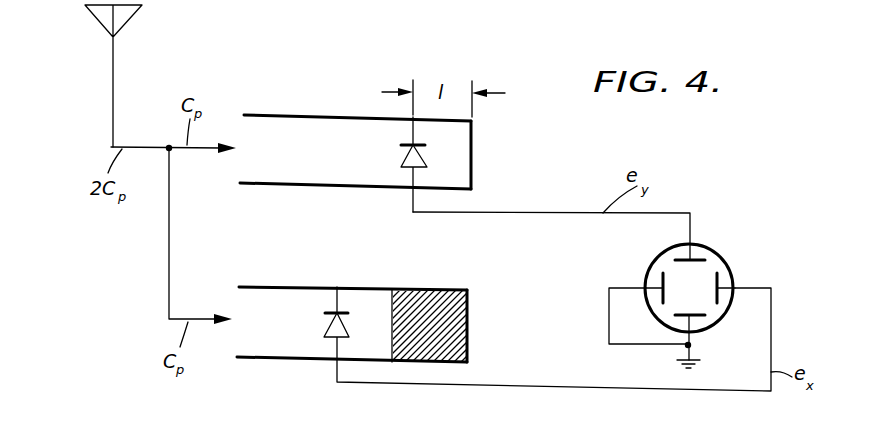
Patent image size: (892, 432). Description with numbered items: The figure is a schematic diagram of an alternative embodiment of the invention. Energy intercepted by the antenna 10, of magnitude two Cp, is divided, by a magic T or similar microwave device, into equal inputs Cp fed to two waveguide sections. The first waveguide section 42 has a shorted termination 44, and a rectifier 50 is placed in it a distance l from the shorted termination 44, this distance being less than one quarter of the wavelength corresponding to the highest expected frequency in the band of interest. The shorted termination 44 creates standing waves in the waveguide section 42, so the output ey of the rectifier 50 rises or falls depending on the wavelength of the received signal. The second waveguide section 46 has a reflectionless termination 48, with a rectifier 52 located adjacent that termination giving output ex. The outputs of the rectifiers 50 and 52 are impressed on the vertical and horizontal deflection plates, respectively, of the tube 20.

The antenna 10 is at (100, 24).
The waveguide section 42 is at (300, 112).
The shorted termination 44 is at (474, 152).
The waveguide section 46 is at (309, 282).
The reflectionless termination 48 is at (430, 290).
The rectifier 50 is at (401, 157).
The rectifier 52 is at (325, 328).
The tube 20 is at (729, 248).